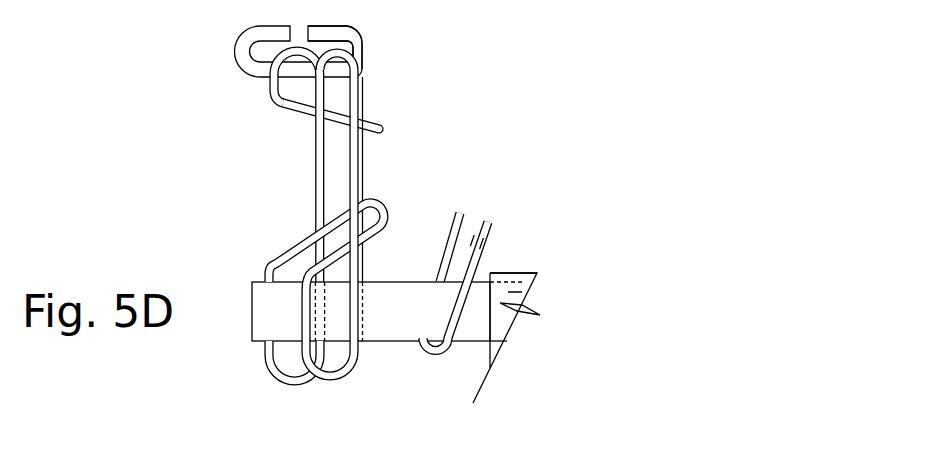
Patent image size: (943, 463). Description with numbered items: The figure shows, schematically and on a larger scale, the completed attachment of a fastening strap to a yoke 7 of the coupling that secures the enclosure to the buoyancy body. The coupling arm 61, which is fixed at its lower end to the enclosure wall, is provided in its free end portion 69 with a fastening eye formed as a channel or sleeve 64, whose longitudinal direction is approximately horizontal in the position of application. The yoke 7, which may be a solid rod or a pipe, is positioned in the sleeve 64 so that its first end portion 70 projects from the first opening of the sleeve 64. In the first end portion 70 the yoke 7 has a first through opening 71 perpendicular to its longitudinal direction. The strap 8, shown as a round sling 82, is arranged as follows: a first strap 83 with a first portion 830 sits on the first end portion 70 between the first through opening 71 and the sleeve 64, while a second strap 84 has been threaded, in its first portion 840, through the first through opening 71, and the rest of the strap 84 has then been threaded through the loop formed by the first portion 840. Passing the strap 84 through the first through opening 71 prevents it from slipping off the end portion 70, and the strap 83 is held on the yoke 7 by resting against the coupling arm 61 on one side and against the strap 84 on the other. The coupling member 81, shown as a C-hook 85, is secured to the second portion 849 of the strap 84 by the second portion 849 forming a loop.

The yoke 7 is at (260, 314).
The first end portion 70 is at (281, 337).
The first through opening 71 is at (333, 327).
The strap 8 is at (361, 151).
The coupling member 81 is at (352, 34).
The C-hook 85 is at (356, 44).
The second portion 849 is at (380, 118).
The second strap 84 is at (359, 183).
The first portion 840 is at (370, 197).
The round sling 82 is at (474, 249).
The first strap 83 is at (470, 268).
The sleeve 64 is at (538, 290).
The first portion 830 is at (453, 323).
The free end portion 69 is at (492, 342).
The coupling arm 61 is at (493, 362).